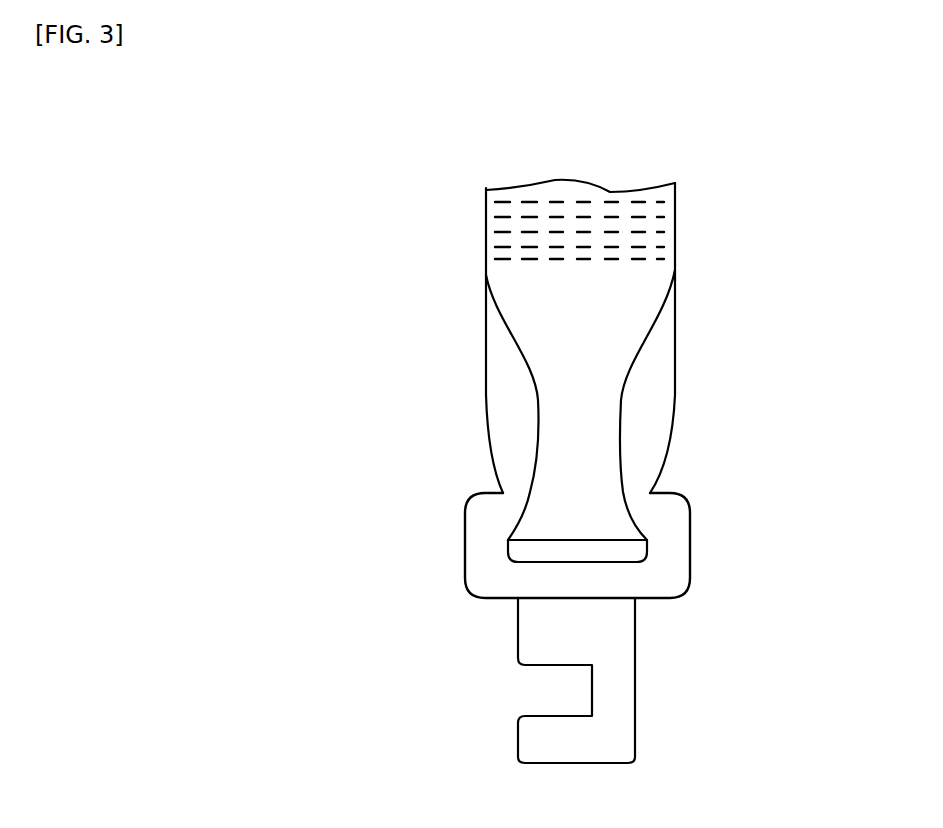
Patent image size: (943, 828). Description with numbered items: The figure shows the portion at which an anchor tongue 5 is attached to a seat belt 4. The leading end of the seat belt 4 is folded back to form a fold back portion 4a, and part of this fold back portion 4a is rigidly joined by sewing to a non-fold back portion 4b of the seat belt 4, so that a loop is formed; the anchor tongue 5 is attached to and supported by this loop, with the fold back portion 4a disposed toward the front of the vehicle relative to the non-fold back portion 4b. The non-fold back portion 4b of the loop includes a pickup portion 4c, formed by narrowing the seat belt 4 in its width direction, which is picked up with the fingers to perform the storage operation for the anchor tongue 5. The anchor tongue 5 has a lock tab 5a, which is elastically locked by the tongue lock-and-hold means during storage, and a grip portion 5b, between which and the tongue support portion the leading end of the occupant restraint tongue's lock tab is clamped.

The seat belt 4 is at (472, 271).
The fold back portion 4a is at (500, 372).
The non-fold back portion 4b is at (648, 281).
The pickup portion 4c is at (594, 424).
The anchor tongue 5 is at (694, 560).
The lock tab 5a is at (615, 714).
The grip portion 5b is at (477, 540).